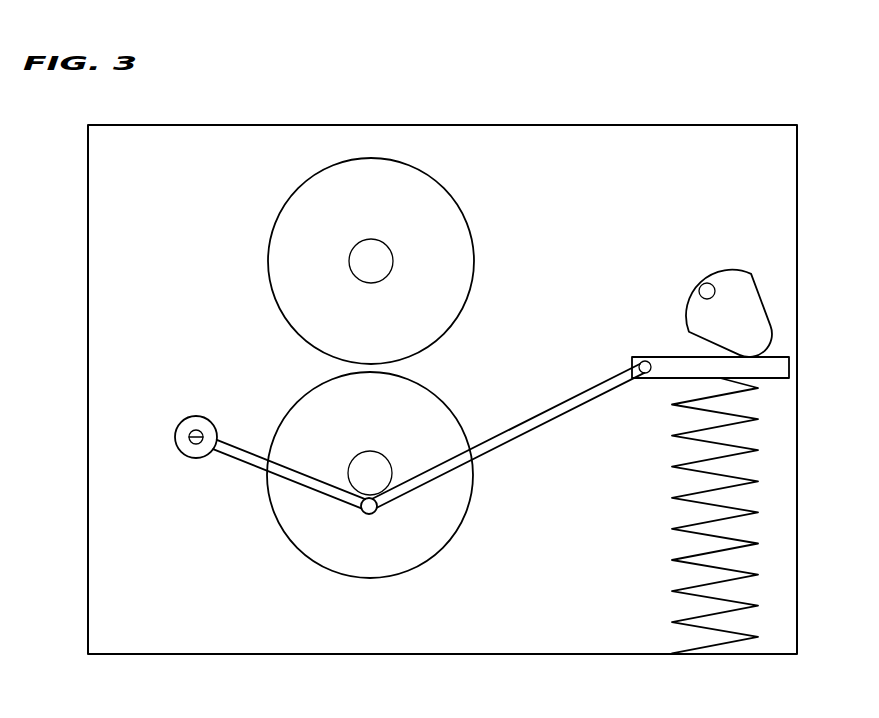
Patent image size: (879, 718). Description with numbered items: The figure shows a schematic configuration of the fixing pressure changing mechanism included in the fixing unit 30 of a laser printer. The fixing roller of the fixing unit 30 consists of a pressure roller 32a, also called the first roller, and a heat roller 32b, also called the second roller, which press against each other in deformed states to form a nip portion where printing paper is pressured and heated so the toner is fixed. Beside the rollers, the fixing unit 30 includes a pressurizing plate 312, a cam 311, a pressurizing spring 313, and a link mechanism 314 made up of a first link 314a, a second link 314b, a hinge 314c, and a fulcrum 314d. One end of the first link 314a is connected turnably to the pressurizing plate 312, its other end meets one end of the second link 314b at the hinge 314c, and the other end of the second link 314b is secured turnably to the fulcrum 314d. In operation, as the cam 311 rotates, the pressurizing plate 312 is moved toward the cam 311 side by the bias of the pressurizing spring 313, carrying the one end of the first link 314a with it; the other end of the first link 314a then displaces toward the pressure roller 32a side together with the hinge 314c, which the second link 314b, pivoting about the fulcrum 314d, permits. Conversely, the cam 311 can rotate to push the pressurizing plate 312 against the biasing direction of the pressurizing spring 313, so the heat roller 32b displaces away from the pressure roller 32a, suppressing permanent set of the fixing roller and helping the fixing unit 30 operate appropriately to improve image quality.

The fixing unit 30 is at (647, 125).
The pressure roller 32a is at (466, 222).
The heat roller 32b is at (449, 400).
The cam 311 is at (719, 246).
The pressurizing plate 312 is at (640, 357).
The pressurizing spring 313 is at (673, 498).
The link mechanism 314 is at (409, 508).
The first link 314a is at (508, 484).
The second link 314b is at (330, 504).
The hinge 314c is at (372, 515).
The fulcrum 314d is at (210, 457).